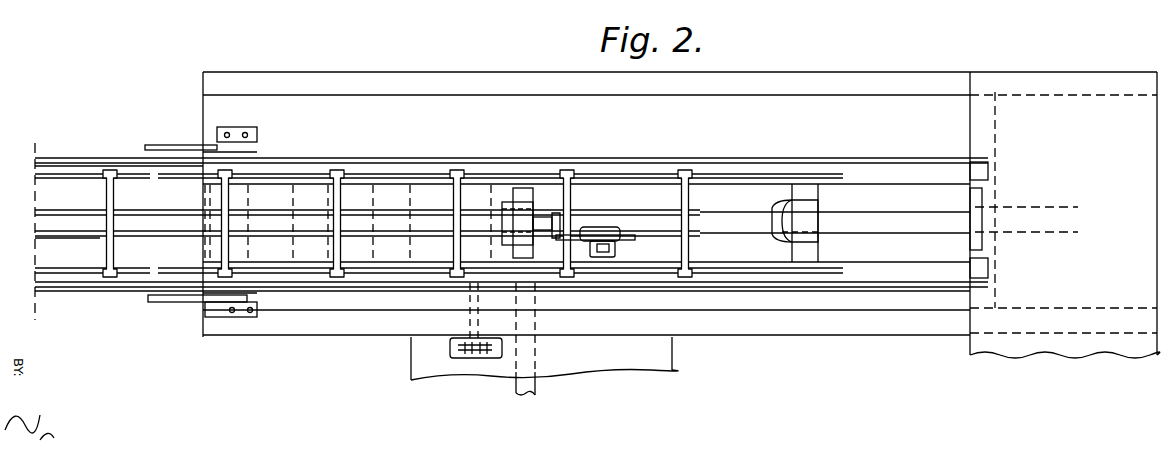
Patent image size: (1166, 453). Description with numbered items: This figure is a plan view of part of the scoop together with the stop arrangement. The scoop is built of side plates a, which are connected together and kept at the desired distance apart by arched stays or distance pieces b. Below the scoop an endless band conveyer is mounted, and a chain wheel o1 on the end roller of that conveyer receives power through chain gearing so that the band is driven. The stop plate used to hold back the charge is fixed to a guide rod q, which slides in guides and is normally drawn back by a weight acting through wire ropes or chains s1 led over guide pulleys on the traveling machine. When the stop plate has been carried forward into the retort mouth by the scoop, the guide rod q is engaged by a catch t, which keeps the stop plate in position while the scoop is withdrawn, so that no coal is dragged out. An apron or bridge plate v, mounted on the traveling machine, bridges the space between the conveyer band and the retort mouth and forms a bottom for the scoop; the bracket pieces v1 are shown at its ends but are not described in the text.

The apron or bridge plate v is at (99, 156).
The bolt bracket v1 is at (212, 134).
The wire ropes or chains s1 is at (68, 215).
The guide rod q is at (82, 224).
The side plates a is at (295, 175).
The arched stays or distance pieces b is at (113, 206).
The catch t is at (575, 235).
The chain wheel o1 is at (450, 349).